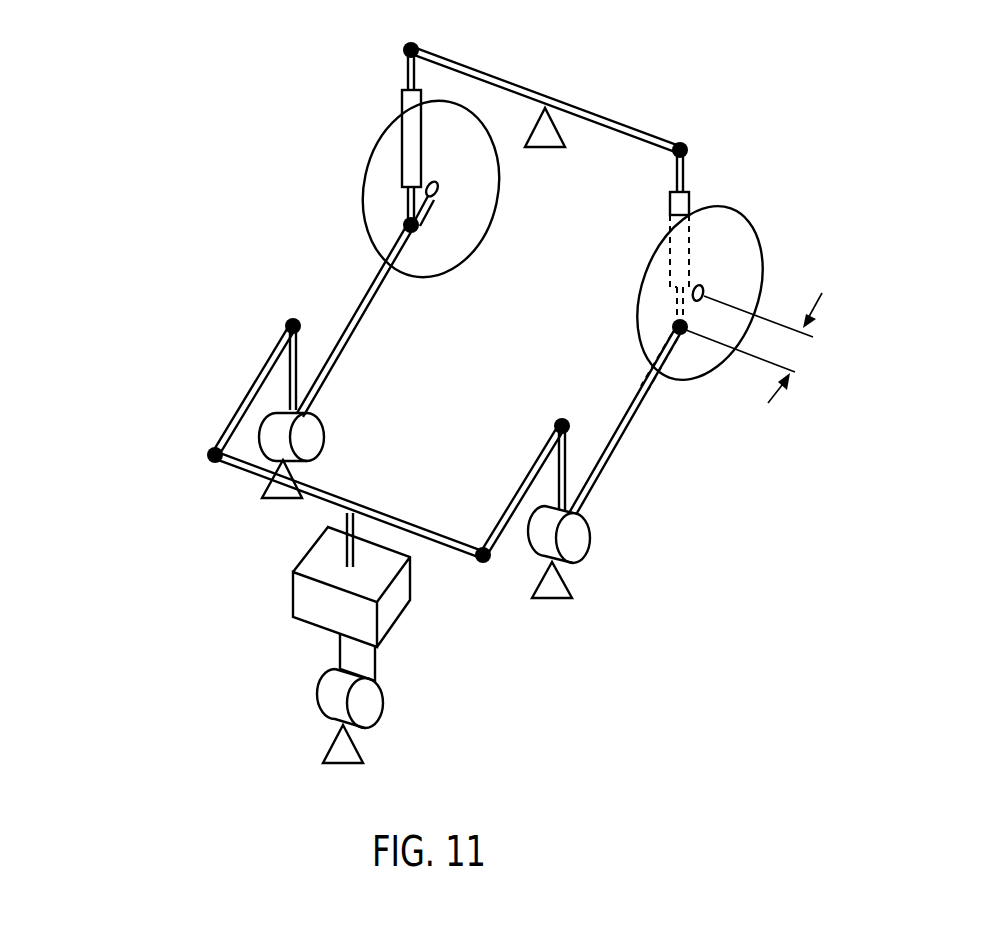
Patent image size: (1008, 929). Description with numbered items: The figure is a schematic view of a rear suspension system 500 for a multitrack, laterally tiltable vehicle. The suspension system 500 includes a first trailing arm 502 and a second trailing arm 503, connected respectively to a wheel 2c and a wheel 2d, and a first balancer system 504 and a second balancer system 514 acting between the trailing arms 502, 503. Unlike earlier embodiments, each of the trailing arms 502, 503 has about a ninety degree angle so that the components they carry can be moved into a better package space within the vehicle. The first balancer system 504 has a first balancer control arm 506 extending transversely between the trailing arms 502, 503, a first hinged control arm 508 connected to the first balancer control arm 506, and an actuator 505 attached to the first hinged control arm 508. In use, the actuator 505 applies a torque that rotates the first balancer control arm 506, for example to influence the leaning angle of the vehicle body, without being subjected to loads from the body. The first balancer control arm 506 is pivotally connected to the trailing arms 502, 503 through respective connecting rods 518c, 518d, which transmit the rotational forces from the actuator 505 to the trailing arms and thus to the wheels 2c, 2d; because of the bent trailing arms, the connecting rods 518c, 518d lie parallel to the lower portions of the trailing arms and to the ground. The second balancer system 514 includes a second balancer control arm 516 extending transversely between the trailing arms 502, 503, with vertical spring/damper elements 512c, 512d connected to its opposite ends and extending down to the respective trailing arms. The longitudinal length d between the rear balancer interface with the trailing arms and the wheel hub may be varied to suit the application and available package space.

The rear suspension system 500 is at (213, 172).
The second balancer system 514 is at (565, 74).
The second balancer control arm 516 is at (625, 116).
The slider 512c is at (402, 100).
The wheel 2c is at (370, 178).
The slider 512d is at (690, 200).
The wheel 2d is at (768, 268).
The longitudinal length d is at (754, 348).
The first trailing arm 502 is at (302, 330).
The connecting rod 518c is at (263, 364).
The second trailing arm 503 is at (570, 430).
The connecting rod 518d is at (536, 460).
The first balancer control arm 506 is at (455, 557).
The actuator 505 is at (293, 597).
The first hinged control arm 508 is at (340, 656).
The first balancer system 504 is at (423, 677).